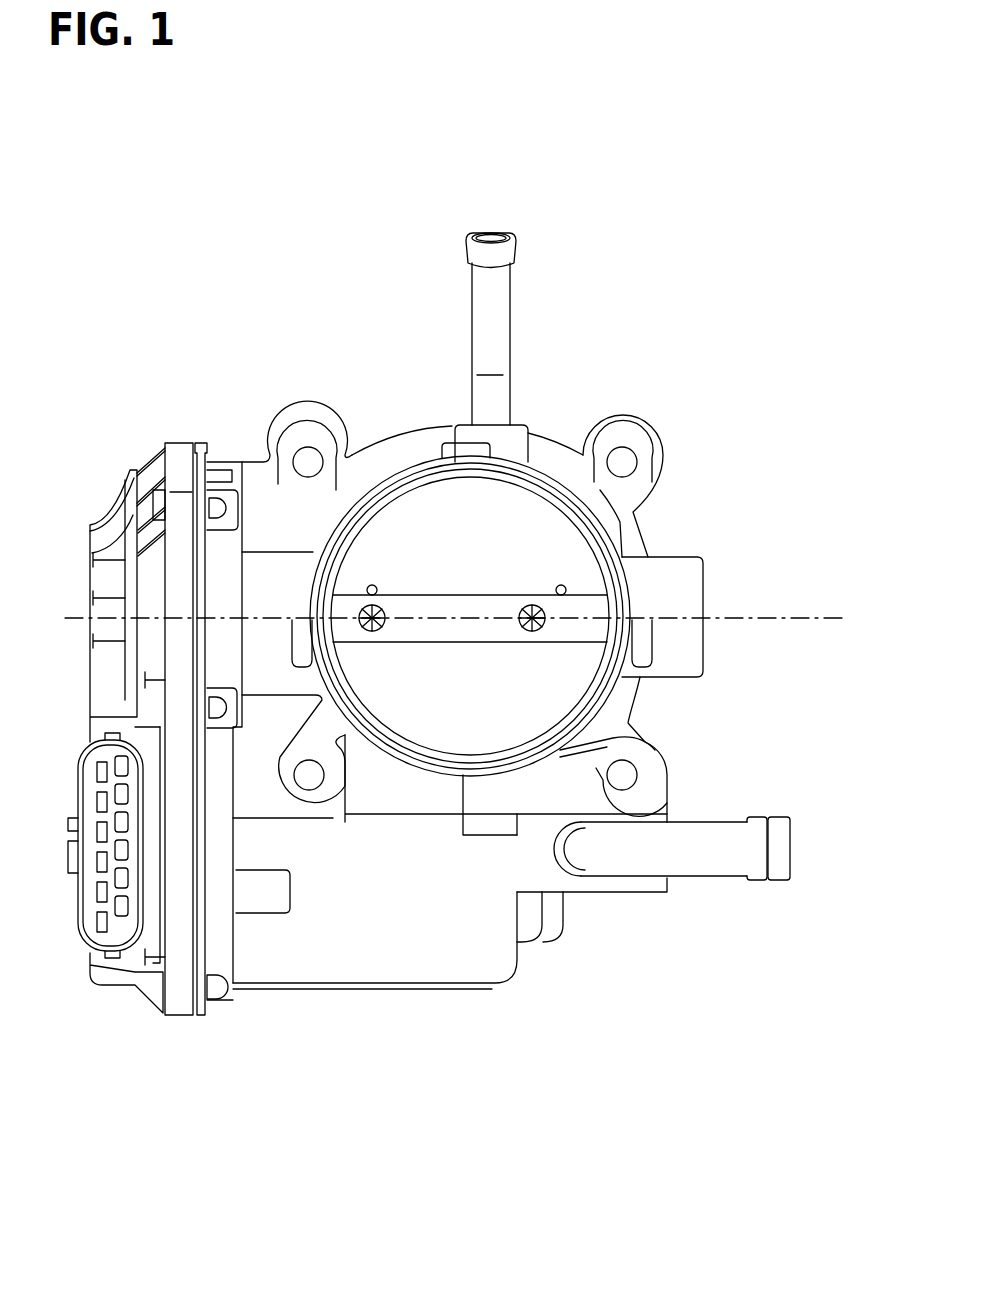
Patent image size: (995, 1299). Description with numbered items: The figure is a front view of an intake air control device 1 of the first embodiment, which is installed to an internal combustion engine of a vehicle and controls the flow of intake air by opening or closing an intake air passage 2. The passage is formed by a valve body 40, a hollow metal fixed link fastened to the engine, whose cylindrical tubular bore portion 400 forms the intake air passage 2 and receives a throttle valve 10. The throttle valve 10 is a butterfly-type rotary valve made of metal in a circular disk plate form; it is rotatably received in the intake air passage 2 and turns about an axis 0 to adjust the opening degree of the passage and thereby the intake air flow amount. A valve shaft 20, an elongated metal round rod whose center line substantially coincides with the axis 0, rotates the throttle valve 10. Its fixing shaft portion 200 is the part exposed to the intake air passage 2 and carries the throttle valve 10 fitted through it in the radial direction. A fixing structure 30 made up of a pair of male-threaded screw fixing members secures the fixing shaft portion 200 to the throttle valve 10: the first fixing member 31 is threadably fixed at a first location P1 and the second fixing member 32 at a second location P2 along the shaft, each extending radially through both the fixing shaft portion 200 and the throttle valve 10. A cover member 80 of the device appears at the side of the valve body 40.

The intake air control device 1 is at (429, 677).
The intake air passage 2 is at (585, 588).
The bore portion 400 is at (590, 548).
The throttle valve 10 is at (517, 533).
The valve shaft 20 is at (430, 596).
The fixing structure 30 is at (448, 863).
The first fixing member 31 is at (372, 631).
The second fixing member 32 is at (532, 631).
The first location P1 is at (372, 630).
The second location P2 is at (532, 631).
The fixing shaft portion 200 is at (593, 606).
The valve body 40 is at (640, 705).
The cover member 80 is at (178, 1000).
The axis 0 is at (750, 617).